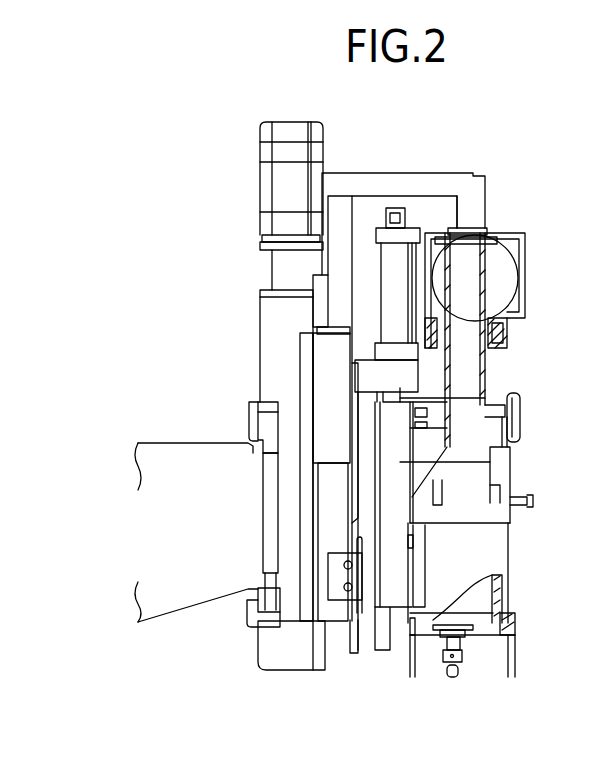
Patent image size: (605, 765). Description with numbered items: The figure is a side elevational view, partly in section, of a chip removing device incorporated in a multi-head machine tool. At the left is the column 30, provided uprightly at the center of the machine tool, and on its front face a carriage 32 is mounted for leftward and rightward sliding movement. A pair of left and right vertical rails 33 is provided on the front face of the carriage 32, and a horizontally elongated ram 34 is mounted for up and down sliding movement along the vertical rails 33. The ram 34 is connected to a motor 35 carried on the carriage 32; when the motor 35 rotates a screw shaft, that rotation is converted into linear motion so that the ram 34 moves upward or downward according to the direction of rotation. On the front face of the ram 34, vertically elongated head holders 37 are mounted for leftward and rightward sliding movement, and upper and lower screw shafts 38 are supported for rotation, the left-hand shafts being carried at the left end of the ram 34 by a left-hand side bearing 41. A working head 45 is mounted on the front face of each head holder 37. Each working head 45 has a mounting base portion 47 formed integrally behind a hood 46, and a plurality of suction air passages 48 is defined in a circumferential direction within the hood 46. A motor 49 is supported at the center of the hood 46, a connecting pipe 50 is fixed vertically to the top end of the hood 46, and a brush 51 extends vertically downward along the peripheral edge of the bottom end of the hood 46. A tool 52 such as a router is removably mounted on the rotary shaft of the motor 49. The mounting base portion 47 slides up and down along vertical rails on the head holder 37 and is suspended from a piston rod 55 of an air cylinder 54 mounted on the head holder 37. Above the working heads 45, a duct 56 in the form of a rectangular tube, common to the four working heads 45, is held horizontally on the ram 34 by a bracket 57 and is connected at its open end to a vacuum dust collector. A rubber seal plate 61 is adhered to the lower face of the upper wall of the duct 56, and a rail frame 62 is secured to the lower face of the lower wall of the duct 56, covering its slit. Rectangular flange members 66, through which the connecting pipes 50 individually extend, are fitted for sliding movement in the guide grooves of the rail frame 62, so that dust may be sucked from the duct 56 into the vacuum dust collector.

The column 30 is at (185, 607).
The carriage 32 is at (280, 317).
The vertical rails 33 is at (318, 290).
The ram 34 is at (326, 377).
The motor 35 is at (287, 183).
The head holders 37 is at (372, 573).
The screw shafts 38 is at (348, 590).
The left-hand side bearing 41 is at (335, 562).
The working head 45 is at (520, 532).
The hood 46 is at (473, 563).
The mounting base portion 47 is at (490, 462).
The suction air passages 48 is at (497, 598).
The motor 49 is at (475, 610).
The connecting pipe 50 is at (488, 287).
The brush 51 is at (518, 662).
The tool 52 is at (456, 678).
The air cylinder 54 is at (400, 262).
The piston rod 55 is at (400, 397).
The duct 56 is at (520, 252).
The bracket 57 is at (363, 175).
The seal plate 61 is at (470, 247).
The rail frame 62 is at (502, 330).
The flange members 66 is at (488, 350).